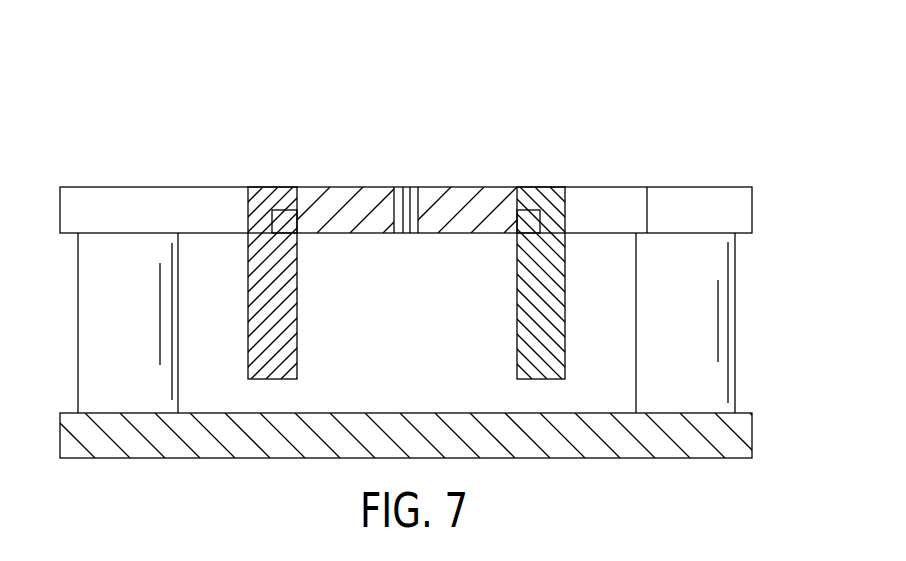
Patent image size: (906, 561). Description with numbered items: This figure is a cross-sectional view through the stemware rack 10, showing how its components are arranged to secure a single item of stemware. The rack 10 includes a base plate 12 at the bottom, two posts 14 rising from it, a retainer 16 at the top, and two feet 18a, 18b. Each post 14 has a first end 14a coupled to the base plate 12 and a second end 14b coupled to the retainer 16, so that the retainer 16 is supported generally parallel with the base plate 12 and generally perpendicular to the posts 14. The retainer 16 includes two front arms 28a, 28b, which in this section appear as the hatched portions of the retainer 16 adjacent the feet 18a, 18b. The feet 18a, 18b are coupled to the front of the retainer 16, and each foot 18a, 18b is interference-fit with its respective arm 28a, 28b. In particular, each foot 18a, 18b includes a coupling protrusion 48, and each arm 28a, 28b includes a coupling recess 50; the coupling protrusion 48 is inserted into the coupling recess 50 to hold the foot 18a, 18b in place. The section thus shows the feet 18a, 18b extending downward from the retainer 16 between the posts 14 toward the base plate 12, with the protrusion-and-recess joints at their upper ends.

The stemware rack 10 is at (123, 68).
The base plate 12 is at (750, 437).
The post 14 is at (88, 322).
The first end 14a is at (97, 390).
The second end 14b is at (97, 252).
The retainer 16 is at (727, 200).
The foot 18a is at (283, 358).
The foot 18b is at (532, 358).
The front arm 28a is at (333, 200).
The front arm 28b is at (480, 200).
The coupling protrusion 48 is at (287, 222).
The coupling recess 50 is at (297, 234).